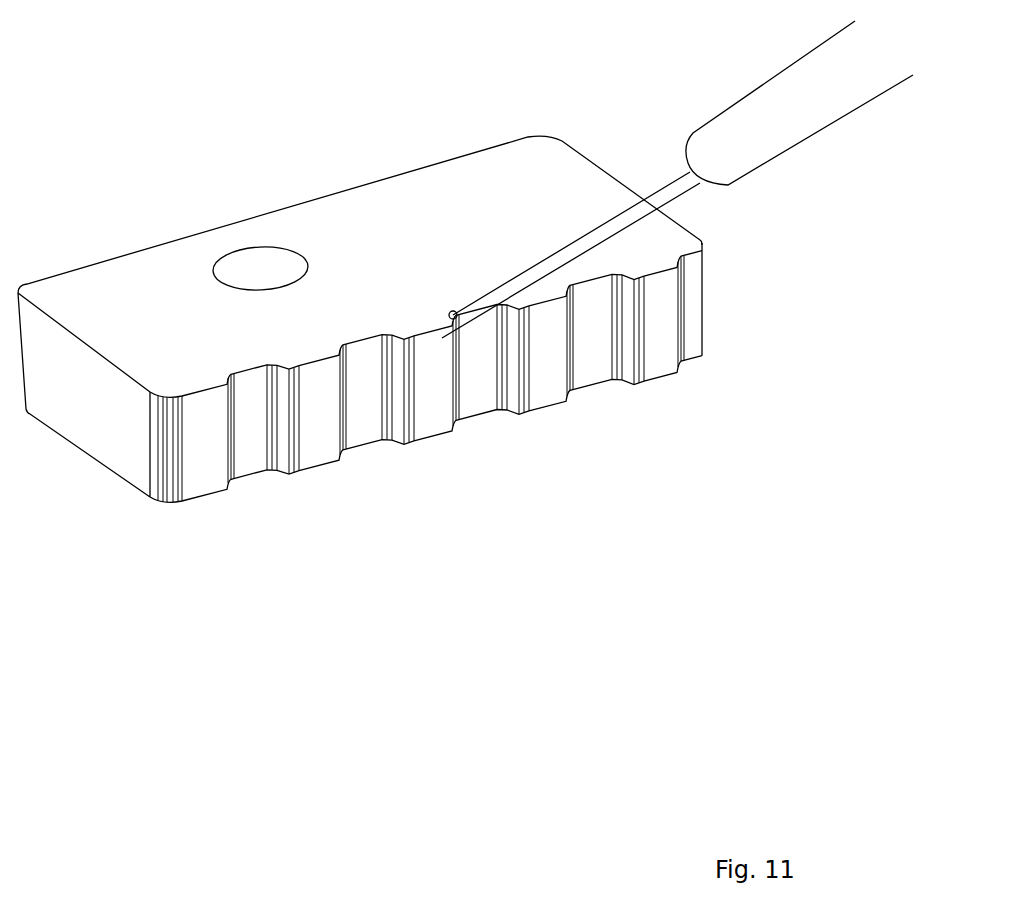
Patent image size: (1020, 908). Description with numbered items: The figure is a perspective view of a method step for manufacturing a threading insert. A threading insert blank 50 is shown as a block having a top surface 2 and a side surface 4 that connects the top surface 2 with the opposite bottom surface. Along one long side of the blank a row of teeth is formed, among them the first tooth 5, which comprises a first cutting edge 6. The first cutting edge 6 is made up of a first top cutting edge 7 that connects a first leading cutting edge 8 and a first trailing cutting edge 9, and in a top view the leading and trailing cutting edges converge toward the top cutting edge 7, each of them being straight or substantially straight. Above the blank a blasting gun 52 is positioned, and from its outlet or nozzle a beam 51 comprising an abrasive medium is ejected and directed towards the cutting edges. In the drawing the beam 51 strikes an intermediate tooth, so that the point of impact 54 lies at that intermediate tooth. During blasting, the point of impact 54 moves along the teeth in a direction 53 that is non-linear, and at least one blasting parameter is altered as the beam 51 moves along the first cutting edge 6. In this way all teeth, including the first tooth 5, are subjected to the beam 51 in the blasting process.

The top surface 2 is at (113, 272).
The side surface 4 is at (133, 442).
The first tooth 5 is at (192, 385).
The first cutting edge 6 is at (180, 397).
The first top cutting edge 7 is at (205, 388).
The first leading cutting edge 8 is at (167, 394).
The first trailing cutting edge 9 is at (230, 375).
The threading insert blank 50 is at (183, 173).
The beam 51 is at (627, 220).
The blasting gun 52 is at (848, 77).
The direction 53 is at (455, 322).
The point of impact 54 is at (437, 335).